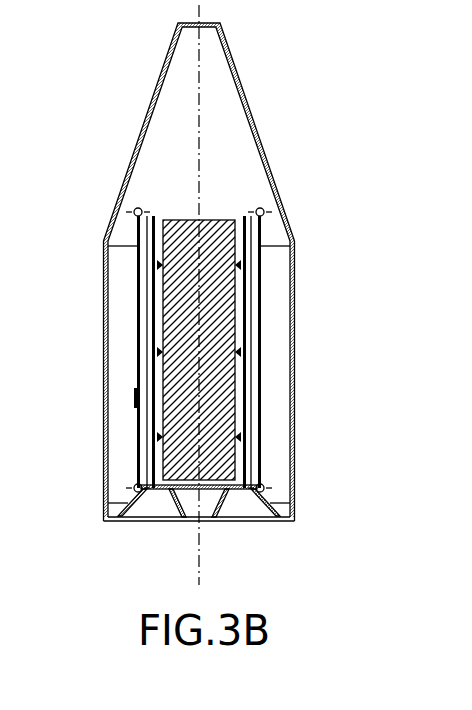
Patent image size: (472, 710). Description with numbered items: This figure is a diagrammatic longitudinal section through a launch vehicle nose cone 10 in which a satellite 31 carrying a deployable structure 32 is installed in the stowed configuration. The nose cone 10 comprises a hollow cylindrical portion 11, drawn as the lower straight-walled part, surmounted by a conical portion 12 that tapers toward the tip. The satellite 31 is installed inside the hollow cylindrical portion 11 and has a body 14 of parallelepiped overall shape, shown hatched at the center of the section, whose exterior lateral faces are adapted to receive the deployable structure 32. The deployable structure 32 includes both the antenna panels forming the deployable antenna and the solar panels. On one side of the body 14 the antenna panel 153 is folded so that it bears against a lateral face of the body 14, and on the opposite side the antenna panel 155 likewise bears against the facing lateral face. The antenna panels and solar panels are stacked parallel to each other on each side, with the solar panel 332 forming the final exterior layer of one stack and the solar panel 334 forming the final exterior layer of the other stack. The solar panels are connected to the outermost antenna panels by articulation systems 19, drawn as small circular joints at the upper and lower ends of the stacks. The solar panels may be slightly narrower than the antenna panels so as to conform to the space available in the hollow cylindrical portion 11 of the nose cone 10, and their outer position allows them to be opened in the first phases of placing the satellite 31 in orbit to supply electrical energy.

The launch vehicle nose cone 10 is at (233, 62).
The hollow cylindrical portion 11 is at (292, 425).
The conical portion 12 is at (277, 198).
The body 14 is at (177, 220).
The articulation systems 19 is at (264, 214).
The satellite 31 is at (182, 169).
The deployable structure 32 is at (160, 510).
The antenna panel 153 is at (147, 215).
The antenna panel 155 is at (252, 218).
The solar panel 332 is at (136, 352).
The solar panel 334 is at (262, 292).